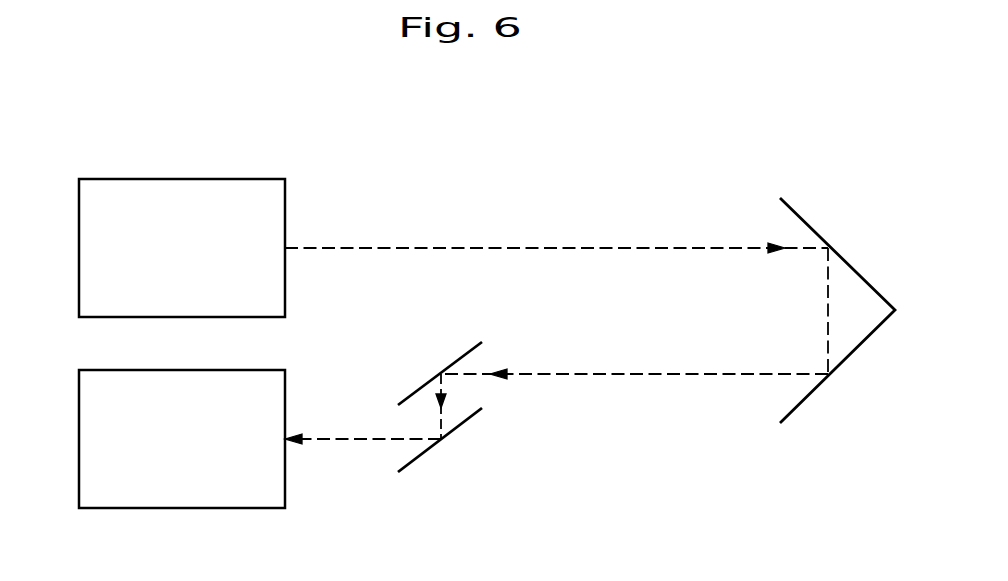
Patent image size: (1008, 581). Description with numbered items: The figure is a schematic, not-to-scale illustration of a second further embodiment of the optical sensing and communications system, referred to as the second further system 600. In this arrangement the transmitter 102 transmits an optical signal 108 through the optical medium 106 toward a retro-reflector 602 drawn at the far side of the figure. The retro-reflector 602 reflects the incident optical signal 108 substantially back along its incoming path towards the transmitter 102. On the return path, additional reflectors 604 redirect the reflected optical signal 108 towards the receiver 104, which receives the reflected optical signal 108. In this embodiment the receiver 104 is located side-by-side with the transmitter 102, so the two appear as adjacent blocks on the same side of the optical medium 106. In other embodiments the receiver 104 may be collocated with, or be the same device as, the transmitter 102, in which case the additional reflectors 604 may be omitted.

The second further system 600 is at (120, 123).
The transmitter 102 is at (257, 179).
The receiver 104 is at (143, 509).
The optical medium 106 is at (560, 221).
The optical signal 108 is at (650, 249).
The retro-reflector 602 is at (815, 227).
The additional reflectors 604 is at (445, 367).